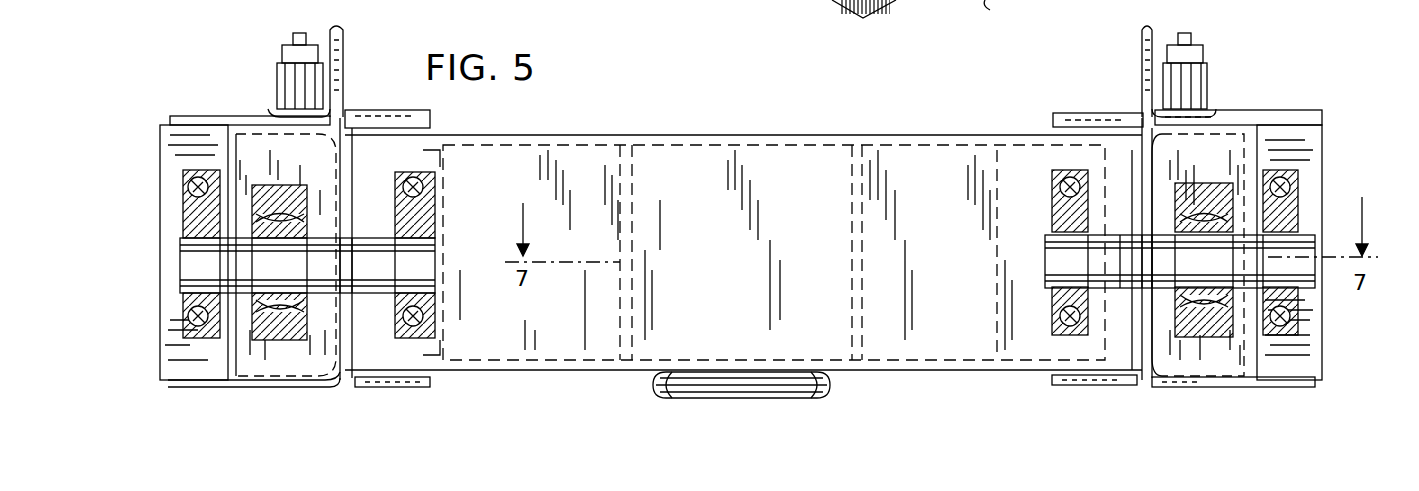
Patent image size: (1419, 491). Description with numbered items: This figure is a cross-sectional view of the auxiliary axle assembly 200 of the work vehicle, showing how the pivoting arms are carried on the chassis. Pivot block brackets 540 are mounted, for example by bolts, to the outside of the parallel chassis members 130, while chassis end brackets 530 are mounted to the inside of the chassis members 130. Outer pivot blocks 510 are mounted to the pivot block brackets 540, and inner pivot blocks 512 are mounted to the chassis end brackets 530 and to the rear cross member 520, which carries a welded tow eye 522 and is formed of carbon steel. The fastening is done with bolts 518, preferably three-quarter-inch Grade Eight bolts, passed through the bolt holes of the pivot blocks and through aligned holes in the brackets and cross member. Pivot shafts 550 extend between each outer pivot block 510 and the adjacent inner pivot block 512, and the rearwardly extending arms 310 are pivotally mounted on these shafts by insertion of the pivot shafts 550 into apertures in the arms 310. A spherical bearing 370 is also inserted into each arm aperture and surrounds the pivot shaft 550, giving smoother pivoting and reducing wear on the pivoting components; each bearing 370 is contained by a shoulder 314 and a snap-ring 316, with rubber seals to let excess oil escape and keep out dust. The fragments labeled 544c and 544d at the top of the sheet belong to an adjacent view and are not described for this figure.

The auxiliary axle assembly 200 is at (372, 395).
The chassis member 130 is at (1130, 376).
The rear cross member 520 is at (795, 150).
The tow eye 522 is at (720, 385).
The inner pivot block 512 is at (1085, 170).
The shoulder 314 is at (1200, 185).
The arm 310 is at (1240, 190).
The snap-ring 316 is at (1260, 215).
The bolt 518 is at (1300, 162).
The outer pivot block 510 is at (1290, 196).
The pivot block bracket 540 is at (1308, 318).
The pivot shaft 550 is at (1240, 290).
The bearing 370 is at (1225, 300).
The chassis end bracket 530 is at (1110, 378).
The guide element 544c is at (920, 0).
The guide element 544d is at (995, 19).